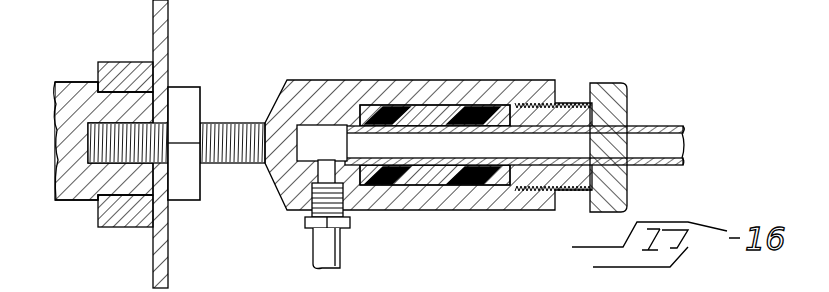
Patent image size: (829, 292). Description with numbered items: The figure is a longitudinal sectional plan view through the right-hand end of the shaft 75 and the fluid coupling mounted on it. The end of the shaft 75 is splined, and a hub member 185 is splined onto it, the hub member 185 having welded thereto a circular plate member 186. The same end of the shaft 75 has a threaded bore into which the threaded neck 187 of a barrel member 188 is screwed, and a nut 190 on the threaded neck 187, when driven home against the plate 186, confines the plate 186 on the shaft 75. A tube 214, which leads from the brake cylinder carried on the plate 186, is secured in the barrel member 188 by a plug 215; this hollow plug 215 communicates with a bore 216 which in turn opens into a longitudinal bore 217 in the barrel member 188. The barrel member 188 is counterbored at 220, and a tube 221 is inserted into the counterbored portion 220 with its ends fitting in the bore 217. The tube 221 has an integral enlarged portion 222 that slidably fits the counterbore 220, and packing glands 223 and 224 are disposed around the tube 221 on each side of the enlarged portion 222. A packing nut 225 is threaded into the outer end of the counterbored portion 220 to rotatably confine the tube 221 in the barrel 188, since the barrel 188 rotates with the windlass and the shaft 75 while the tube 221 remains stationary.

The shaft 75 is at (70, 200).
The hub member 185 is at (109, 62).
The circular plate member 186 is at (168, 22).
The threaded neck 187 is at (231, 124).
The barrel member 188 is at (350, 80).
The nut 190 is at (200, 88).
The tube 214 is at (340, 250).
The plug 215 is at (350, 222).
The bore 216 is at (332, 162).
The longitudinal bore 217 is at (323, 130).
The counterbored portion 220 is at (450, 105).
The tube 221 is at (653, 127).
The enlarged portion 222 is at (432, 76).
The packing gland 223 is at (388, 184).
The packing gland 224 is at (472, 183).
The packing nut 225 is at (608, 81).